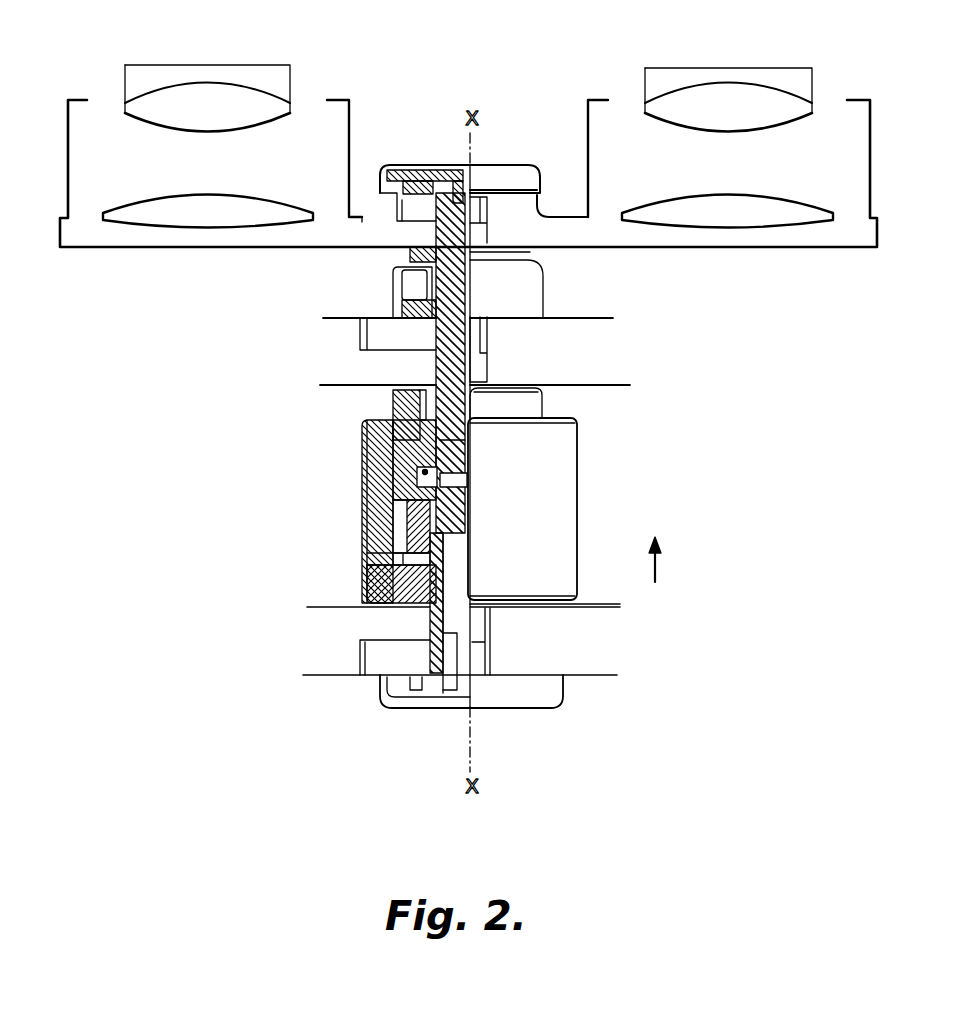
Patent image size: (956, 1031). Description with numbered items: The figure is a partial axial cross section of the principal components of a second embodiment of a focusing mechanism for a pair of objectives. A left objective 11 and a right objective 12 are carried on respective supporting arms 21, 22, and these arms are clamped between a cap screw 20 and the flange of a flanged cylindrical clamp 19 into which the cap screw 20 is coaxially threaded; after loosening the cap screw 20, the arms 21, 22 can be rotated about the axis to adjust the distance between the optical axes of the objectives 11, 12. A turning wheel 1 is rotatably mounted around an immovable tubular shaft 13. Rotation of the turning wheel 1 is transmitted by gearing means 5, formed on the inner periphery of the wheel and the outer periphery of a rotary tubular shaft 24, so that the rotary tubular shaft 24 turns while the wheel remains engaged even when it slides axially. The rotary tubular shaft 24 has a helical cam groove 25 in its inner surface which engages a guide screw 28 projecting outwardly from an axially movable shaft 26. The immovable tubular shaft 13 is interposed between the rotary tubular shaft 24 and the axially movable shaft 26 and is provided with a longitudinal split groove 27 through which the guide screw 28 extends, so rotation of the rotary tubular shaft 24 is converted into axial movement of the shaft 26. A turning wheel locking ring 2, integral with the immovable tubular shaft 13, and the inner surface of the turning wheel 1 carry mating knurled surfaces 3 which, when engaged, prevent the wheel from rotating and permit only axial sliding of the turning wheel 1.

The turning wheel 1 is at (372, 452).
The turning wheel locking ring 2 is at (393, 518).
The knurled surface 3 is at (393, 543).
The gearing means 5 is at (393, 477).
The left objective 11 is at (200, 93).
The right objective 12 is at (717, 95).
The immovable tubular shaft 13 is at (385, 590).
The flanged cylindrical clamp 19 is at (402, 257).
The cap screw 20 is at (458, 170).
The supporting arm 21 is at (395, 233).
The supporting arm 22 is at (418, 210).
The rotary tubular shaft 24 is at (393, 403).
The helical cam groove 25 is at (436, 460).
The axially movable shaft 26 is at (450, 364).
The longitudinal split groove 27 is at (436, 443).
The guide screw 28 is at (453, 478).